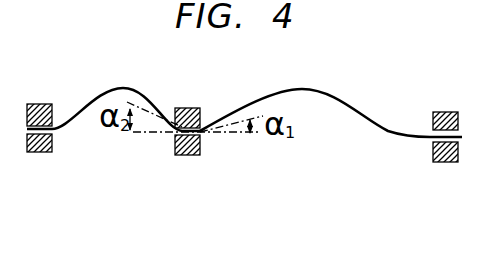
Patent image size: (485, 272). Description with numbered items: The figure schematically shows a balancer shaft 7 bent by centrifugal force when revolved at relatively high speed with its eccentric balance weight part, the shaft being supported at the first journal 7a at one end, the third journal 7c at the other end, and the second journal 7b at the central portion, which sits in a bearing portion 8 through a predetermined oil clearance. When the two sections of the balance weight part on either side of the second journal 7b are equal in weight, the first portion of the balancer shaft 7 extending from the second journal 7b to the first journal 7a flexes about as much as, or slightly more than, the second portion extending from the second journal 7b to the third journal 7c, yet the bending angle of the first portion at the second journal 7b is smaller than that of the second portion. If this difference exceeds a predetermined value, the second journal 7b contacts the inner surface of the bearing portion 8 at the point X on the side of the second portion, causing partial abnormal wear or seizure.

The balancer shaft 7 is at (244, 120).
The first journal 7a is at (437, 138).
The second journal 7b is at (177, 133).
The third journal 7c is at (50, 130).
The bearing portion 8 is at (202, 127).
The contact point X is at (172, 125).